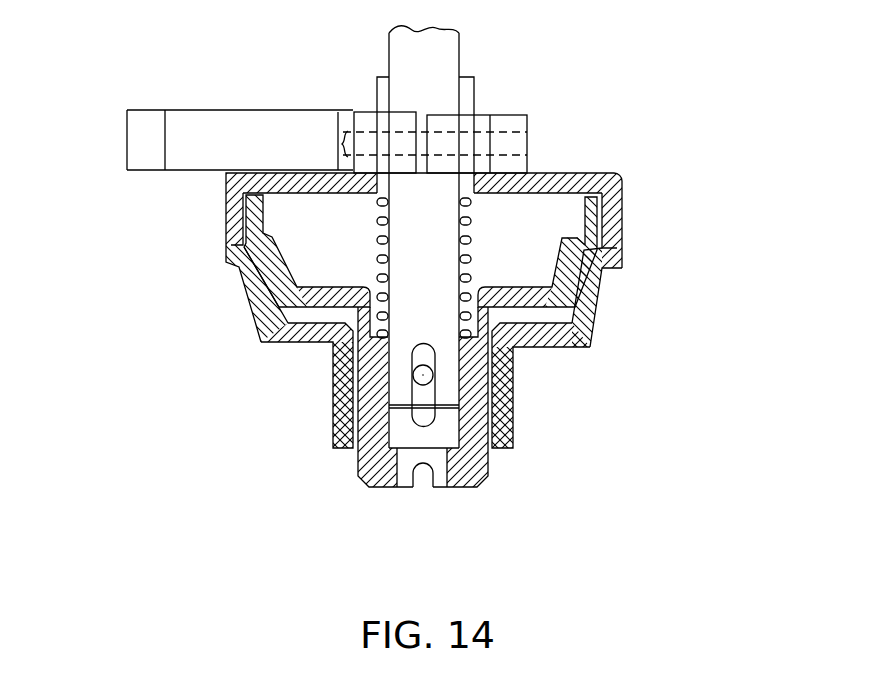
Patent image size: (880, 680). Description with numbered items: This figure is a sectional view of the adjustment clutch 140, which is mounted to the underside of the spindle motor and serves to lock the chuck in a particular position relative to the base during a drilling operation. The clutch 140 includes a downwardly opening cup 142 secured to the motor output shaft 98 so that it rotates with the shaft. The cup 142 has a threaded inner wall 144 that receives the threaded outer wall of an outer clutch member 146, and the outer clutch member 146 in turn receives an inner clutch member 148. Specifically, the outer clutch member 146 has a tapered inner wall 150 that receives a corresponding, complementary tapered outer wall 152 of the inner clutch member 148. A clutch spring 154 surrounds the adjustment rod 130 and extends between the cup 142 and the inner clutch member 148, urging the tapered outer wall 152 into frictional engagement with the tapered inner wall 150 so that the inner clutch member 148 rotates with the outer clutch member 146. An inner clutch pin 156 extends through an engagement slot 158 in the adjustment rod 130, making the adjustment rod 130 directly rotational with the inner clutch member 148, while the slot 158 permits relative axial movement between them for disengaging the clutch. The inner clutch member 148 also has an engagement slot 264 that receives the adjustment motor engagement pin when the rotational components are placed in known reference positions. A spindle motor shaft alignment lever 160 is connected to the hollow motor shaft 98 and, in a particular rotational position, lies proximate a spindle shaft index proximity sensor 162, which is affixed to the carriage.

The motor output shaft 98 is at (475, 95).
The adjustment rod 130 is at (452, 50).
The adjustment clutch 140 is at (285, 75).
The cup 142 is at (560, 182).
The threaded inner wall 144 is at (626, 262).
The outer clutch member 146 is at (545, 345).
The inner clutch member 148 is at (586, 312).
The tapered inner wall 150 is at (522, 358).
The tapered outer wall 152 is at (570, 282).
The clutch spring 154 is at (466, 240).
The inner clutch pin 156 is at (434, 374).
The engagement slot 158 is at (423, 428).
The spindle motor shaft alignment lever 160 is at (196, 154).
The spindle shaft index proximity sensor 162 is at (138, 163).
The engagement slot 264 is at (423, 480).